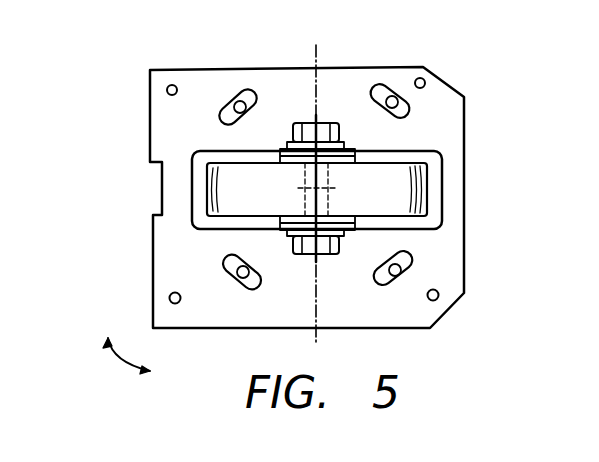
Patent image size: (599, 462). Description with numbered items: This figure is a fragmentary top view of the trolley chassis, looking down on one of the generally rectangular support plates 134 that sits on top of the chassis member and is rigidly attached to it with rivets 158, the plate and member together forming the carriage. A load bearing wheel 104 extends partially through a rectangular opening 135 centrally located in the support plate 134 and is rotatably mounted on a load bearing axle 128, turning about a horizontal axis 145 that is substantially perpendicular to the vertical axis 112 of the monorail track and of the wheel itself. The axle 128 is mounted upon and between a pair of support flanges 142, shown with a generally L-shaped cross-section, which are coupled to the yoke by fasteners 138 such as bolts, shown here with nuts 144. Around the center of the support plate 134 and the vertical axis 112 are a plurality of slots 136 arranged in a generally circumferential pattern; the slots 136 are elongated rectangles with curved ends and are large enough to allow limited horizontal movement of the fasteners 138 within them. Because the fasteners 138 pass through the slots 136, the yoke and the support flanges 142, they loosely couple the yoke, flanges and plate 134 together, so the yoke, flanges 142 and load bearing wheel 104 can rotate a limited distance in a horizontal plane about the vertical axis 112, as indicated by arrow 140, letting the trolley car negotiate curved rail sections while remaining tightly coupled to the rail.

The load-bearing wheel 104 is at (428, 190).
The vertical axis 112 is at (312, 188).
The load bearing axle 128 is at (336, 177).
The support plate 134 is at (150, 118).
The rectangular opening 135 is at (442, 155).
The slot 136 is at (248, 92).
The fastener 138 is at (393, 97).
The arrow 140 is at (120, 358).
The support flange 142 is at (346, 150).
The nut 144 is at (300, 123).
The horizontal axis 145 is at (316, 45).
The rivet 158 is at (174, 85).